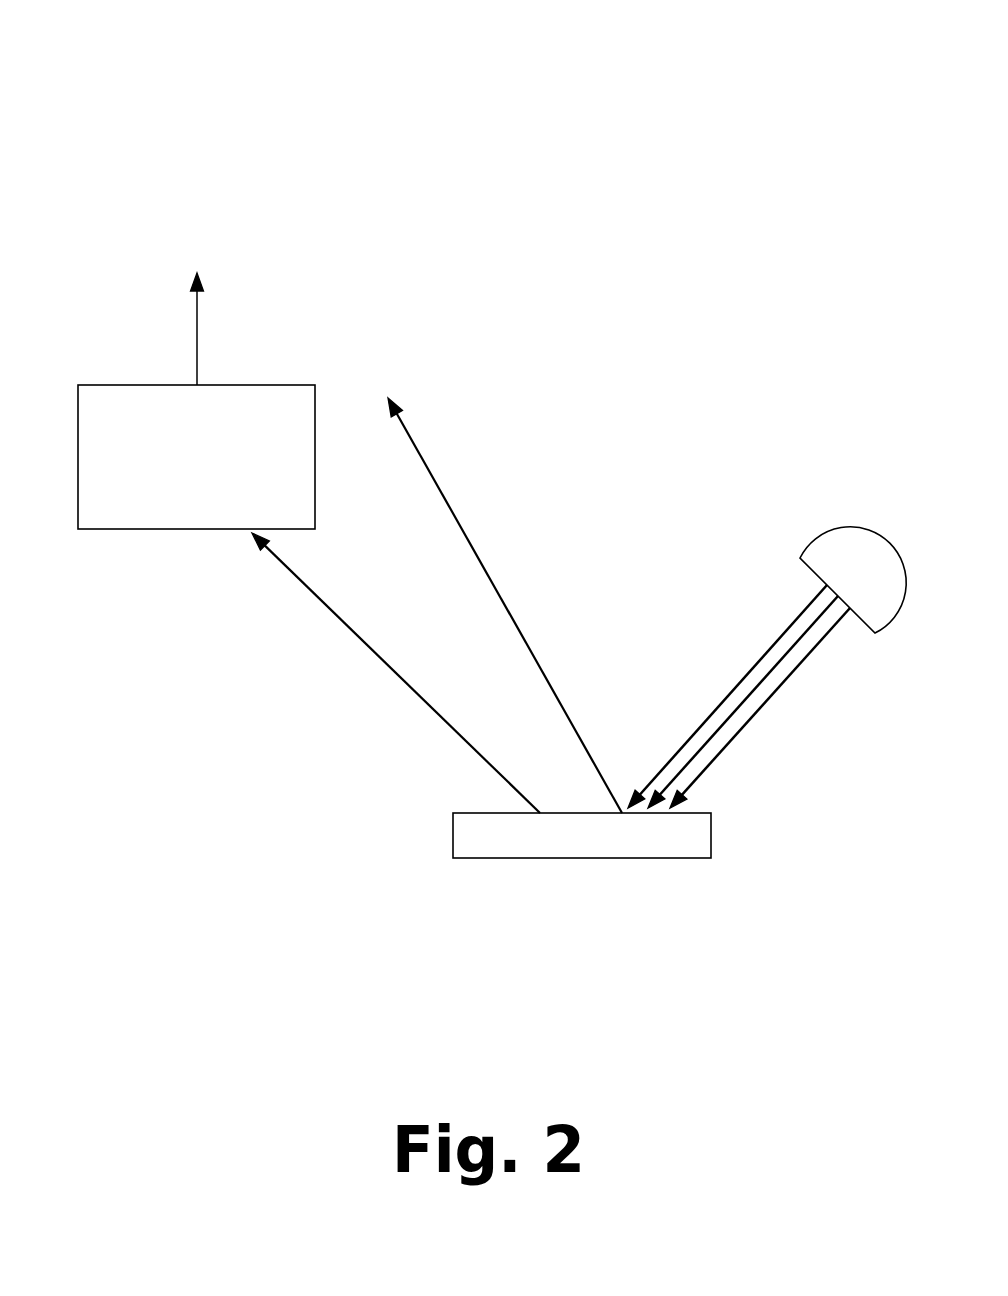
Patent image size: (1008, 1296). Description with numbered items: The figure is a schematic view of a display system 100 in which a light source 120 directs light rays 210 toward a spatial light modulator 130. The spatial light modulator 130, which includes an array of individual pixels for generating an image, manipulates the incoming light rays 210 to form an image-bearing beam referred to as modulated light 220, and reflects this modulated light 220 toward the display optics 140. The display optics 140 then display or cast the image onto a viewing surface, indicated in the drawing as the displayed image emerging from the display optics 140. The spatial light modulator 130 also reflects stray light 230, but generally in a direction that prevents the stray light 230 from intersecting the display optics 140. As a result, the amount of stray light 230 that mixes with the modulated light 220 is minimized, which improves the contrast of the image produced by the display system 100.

The display system 100 is at (492, 142).
The light source 120 is at (870, 527).
The spatial light modulator 130 is at (680, 858).
The display optics 140 is at (122, 385).
The light rays 210 is at (738, 670).
The modulated light 220 is at (321, 614).
The stray light 230 is at (472, 519).